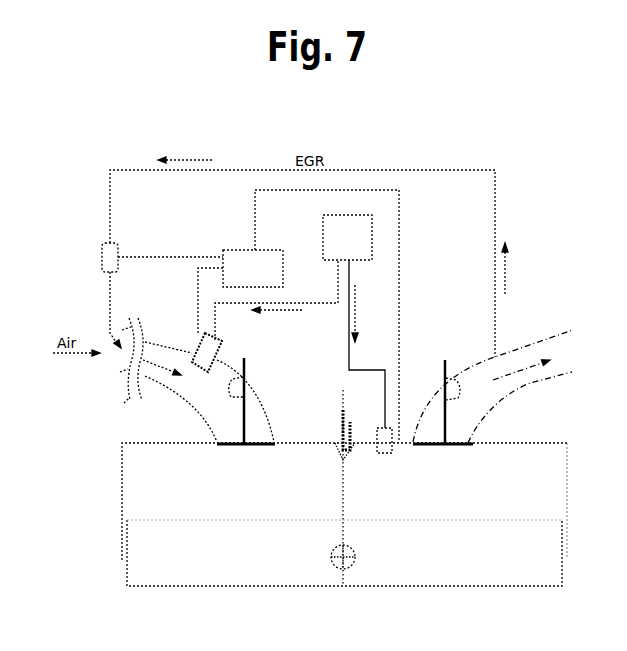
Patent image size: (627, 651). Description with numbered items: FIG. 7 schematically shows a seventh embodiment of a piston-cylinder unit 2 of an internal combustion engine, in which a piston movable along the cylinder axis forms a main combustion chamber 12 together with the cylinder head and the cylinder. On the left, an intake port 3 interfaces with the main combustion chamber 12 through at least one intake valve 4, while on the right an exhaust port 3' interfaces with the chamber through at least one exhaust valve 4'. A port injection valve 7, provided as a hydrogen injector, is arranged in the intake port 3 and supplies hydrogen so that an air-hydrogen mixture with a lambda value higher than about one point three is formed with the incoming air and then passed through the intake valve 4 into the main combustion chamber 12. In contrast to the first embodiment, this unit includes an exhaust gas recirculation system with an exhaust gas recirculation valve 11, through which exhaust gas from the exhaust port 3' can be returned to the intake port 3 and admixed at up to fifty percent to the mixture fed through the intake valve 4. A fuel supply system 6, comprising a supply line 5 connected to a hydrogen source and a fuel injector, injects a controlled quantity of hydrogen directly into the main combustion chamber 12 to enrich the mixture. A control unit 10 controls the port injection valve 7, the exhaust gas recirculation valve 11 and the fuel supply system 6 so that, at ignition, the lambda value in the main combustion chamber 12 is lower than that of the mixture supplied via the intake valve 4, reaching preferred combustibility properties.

The piston-cylinder unit 2 is at (103, 500).
The intake port 3 is at (197, 380).
The exhaust port 3' is at (493, 386).
The intake valve 4 is at (233, 426).
The exhaust valve 4' is at (456, 426).
The supply line 5 is at (350, 284).
The fuel supply system 6 is at (393, 447).
The port injection valve 7 is at (207, 352).
The control unit 10 is at (258, 315).
The exhaust gas recirculation valve 11 is at (107, 256).
The main combustion chamber 12 is at (290, 494).